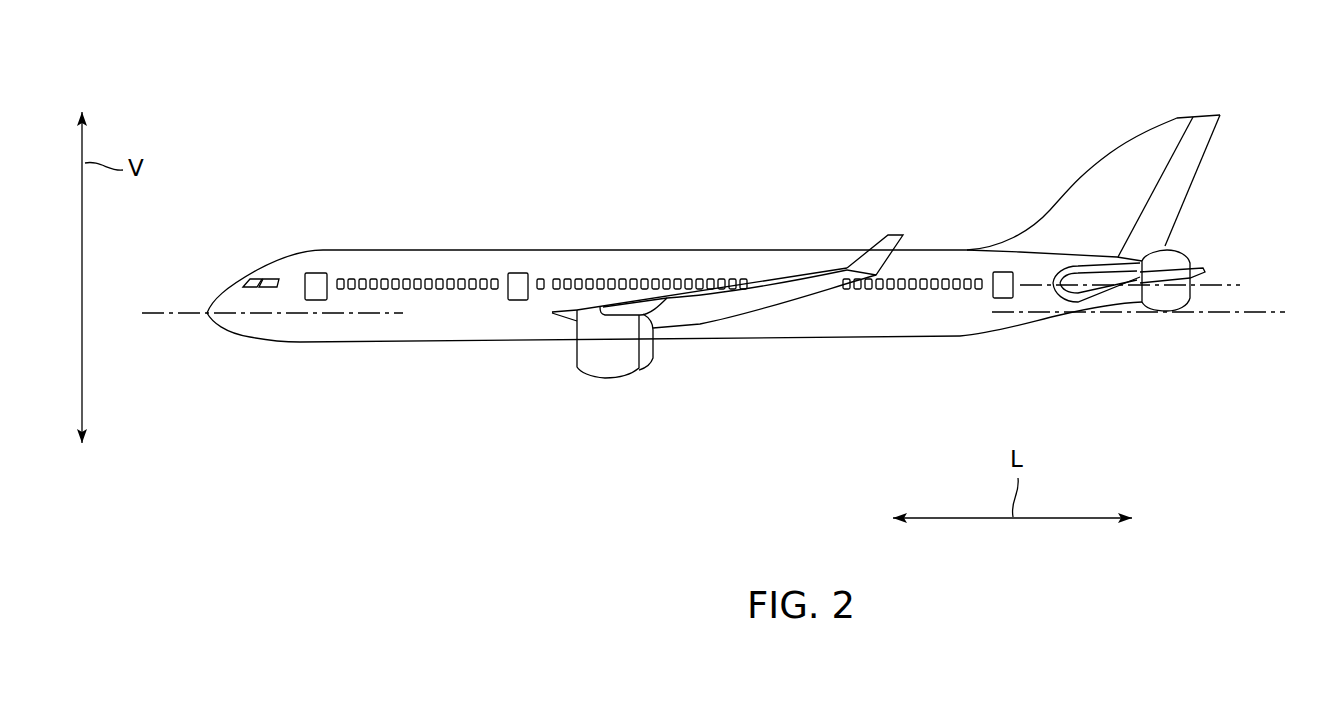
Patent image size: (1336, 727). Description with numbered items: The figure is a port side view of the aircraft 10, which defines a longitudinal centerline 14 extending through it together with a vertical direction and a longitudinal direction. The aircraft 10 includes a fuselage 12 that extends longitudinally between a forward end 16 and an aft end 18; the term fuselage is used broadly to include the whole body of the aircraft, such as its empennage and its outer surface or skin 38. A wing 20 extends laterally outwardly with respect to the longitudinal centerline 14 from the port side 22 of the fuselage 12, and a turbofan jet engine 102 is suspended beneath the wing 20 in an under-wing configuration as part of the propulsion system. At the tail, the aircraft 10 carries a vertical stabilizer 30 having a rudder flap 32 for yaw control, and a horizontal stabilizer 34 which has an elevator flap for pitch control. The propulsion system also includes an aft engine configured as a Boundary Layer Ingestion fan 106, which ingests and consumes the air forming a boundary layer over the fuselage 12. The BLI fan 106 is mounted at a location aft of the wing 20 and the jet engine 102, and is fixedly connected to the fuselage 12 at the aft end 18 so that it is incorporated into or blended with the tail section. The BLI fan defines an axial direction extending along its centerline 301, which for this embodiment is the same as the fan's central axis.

The aircraft 10 is at (265, 122).
The fuselage 12 is at (270, 323).
The longitudinal centerline 14 is at (160, 312).
The forward end 16 is at (203, 318).
The aft end 18 is at (1085, 313).
The wing 20 is at (683, 322).
The port side 22 is at (893, 338).
The vertical stabilizer 30 is at (1148, 143).
The rudder flap 32 is at (1200, 148).
The horizontal stabilizer 34 is at (1133, 273).
The outer surface or skin 38 is at (620, 232).
The turbofan jet engine 102 is at (593, 380).
The Boundary Layer Ingestion (BLI) fan 106 is at (1187, 243).
The centerline 301 is at (1040, 285).